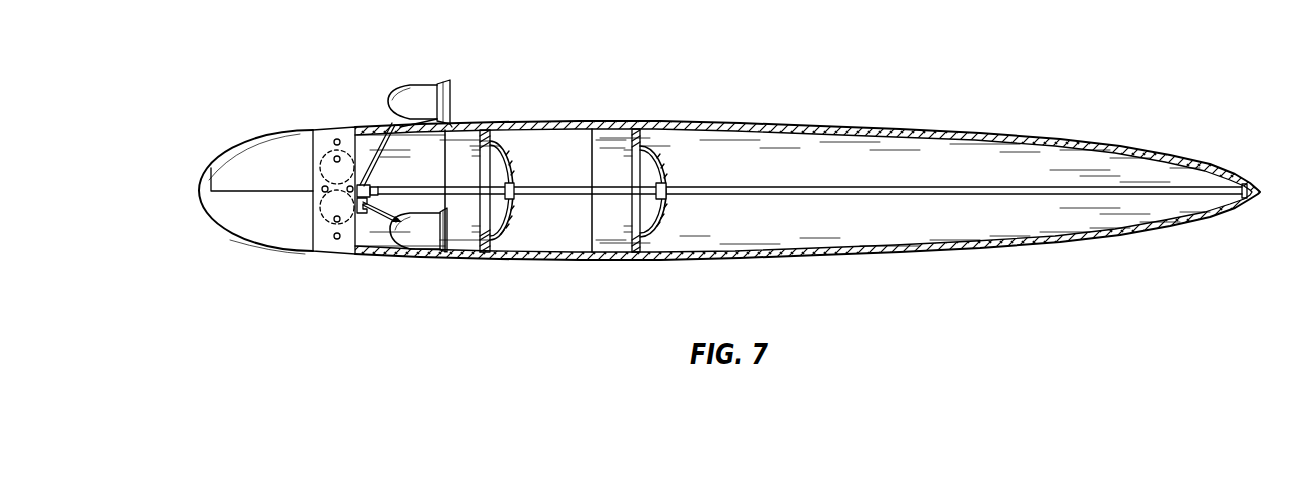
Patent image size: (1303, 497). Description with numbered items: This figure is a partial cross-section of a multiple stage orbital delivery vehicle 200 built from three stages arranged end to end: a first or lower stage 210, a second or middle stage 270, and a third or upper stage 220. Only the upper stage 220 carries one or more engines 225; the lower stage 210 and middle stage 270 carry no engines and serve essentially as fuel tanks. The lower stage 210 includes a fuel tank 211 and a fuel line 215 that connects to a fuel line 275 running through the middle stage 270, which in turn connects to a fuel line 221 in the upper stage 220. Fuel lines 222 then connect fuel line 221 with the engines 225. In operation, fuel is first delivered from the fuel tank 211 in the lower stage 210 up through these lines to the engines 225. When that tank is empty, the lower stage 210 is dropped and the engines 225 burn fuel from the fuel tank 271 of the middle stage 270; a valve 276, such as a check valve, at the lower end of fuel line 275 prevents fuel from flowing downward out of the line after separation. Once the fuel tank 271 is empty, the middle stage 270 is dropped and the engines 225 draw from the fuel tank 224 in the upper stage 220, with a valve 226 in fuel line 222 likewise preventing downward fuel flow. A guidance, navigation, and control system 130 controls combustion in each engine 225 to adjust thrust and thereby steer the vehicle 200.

The multiple stage orbital delivery vehicle 200 is at (166, 49).
The lower stage 210 is at (973, 120).
The fuel tank 211 is at (1115, 173).
The fuel line 215 is at (857, 196).
The upper stage 220 is at (249, 131).
The fuel line 221 is at (462, 215).
The fuel lines 222 is at (374, 141).
The fuel tank 224 is at (428, 178).
The engines 225 is at (420, 84).
The valve 226 is at (512, 200).
The middle stage 270 is at (516, 109).
The fuel tank 271 is at (572, 146).
The fuel line 275 is at (523, 185).
The valve 276 is at (667, 202).
The guidance, navigation, and control system 130 is at (372, 216).